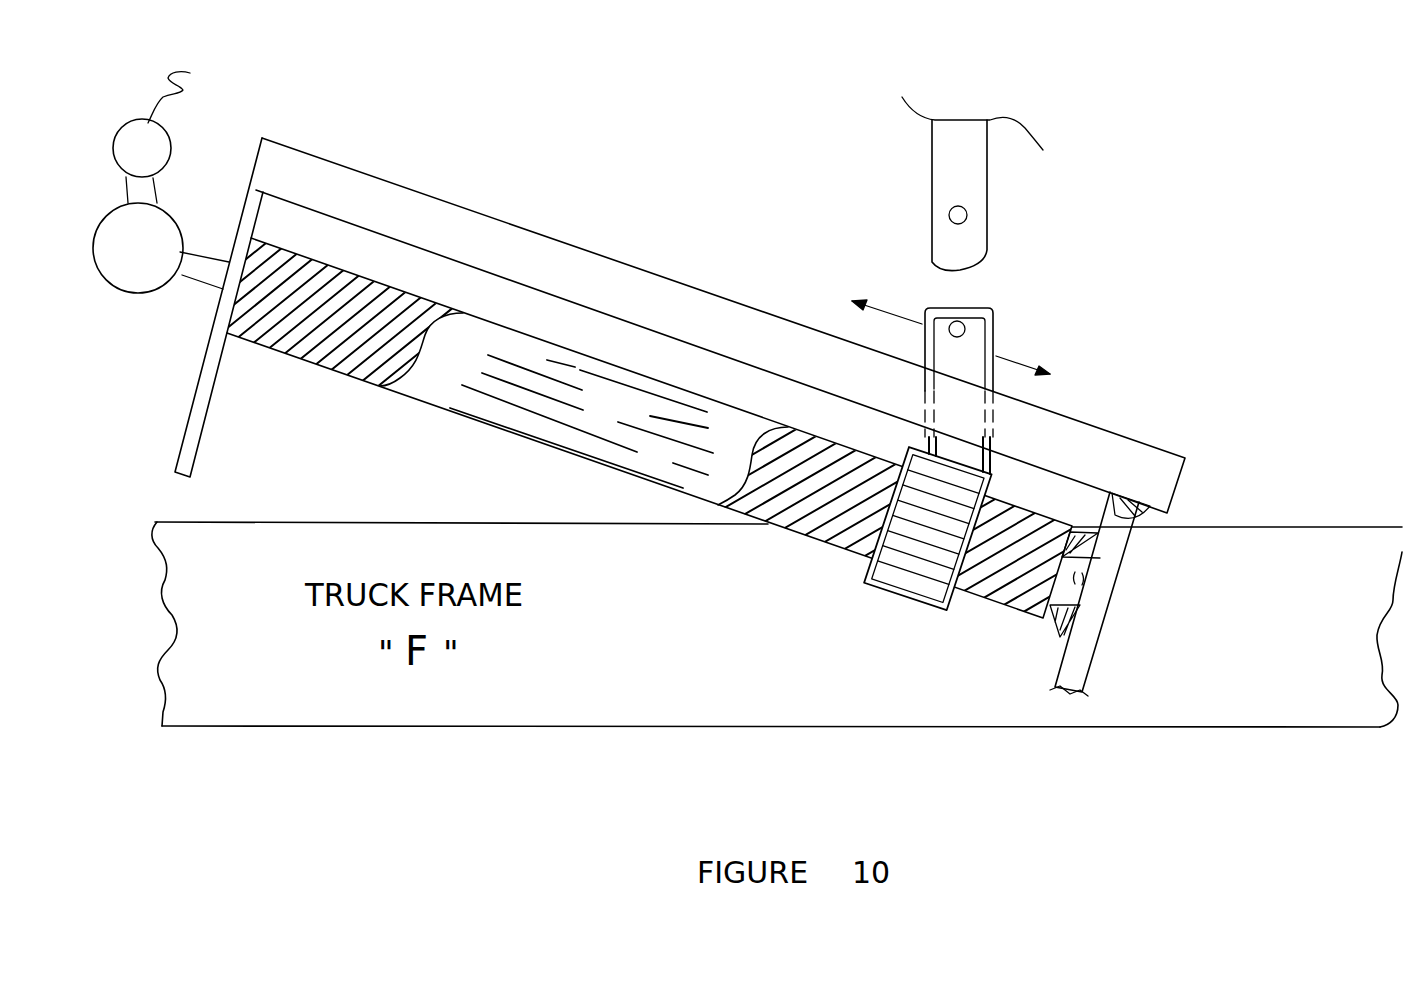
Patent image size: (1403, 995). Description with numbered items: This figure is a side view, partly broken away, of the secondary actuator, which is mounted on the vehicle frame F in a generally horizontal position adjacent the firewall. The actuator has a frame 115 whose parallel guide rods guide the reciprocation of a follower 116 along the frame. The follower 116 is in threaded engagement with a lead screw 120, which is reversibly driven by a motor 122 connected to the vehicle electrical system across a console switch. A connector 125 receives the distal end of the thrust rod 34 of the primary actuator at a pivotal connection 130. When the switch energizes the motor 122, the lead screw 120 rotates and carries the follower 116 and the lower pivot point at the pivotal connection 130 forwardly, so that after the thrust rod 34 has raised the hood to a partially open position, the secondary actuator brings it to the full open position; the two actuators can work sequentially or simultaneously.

The frame 115 is at (382, 197).
The follower 116 is at (872, 589).
The lead screw 120 is at (300, 345).
The motor 122 is at (150, 288).
The connector 125 is at (993, 347).
The pivotal connection 130 is at (963, 320).
The thrust rod 34 is at (970, 177).